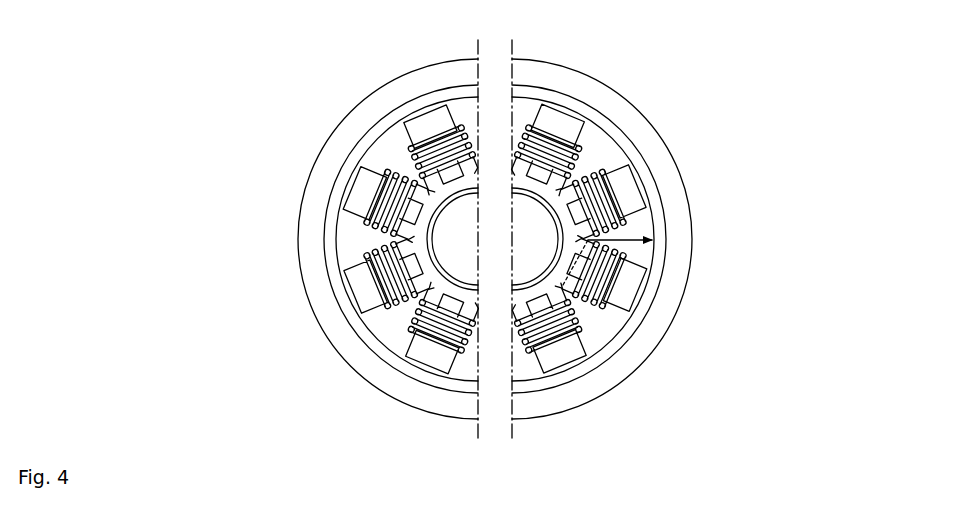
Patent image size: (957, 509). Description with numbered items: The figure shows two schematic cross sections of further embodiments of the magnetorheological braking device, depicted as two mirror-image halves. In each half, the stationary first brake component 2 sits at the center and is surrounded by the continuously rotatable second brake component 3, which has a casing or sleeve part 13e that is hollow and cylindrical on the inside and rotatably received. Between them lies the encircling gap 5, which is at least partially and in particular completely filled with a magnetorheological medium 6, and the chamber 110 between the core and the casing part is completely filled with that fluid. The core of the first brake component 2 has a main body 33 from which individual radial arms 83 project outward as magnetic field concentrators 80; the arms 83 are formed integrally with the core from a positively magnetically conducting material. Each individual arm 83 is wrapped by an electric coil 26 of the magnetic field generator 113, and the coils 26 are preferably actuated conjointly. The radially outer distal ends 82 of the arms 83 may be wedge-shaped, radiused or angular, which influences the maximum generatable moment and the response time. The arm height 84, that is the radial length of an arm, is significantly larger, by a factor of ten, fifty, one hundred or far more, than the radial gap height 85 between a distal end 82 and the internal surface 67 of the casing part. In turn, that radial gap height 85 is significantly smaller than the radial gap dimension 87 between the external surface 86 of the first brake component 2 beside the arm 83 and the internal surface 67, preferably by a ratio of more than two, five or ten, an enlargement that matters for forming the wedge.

The first brake component 2 is at (402, 323).
The second brake component 3 is at (588, 423).
The sleeve part 13e is at (349, 97).
The gap 5 is at (357, 222).
The magnetorheological medium 6 is at (387, 157).
The electric coil 26 is at (441, 328).
The main body 33 is at (467, 262).
The internal surface 67 is at (469, 100).
The magnetic field concentrator 80 is at (568, 125).
The distal end 82 is at (651, 185).
The arm 83 is at (363, 193).
The arm height 84 is at (631, 288).
The radial gap height 85 is at (581, 303).
The external surface 86 is at (346, 278).
The radial gap dimension 87 is at (655, 240).
The chamber 110 is at (528, 93).
The magnetic field generator 113 is at (287, 92).